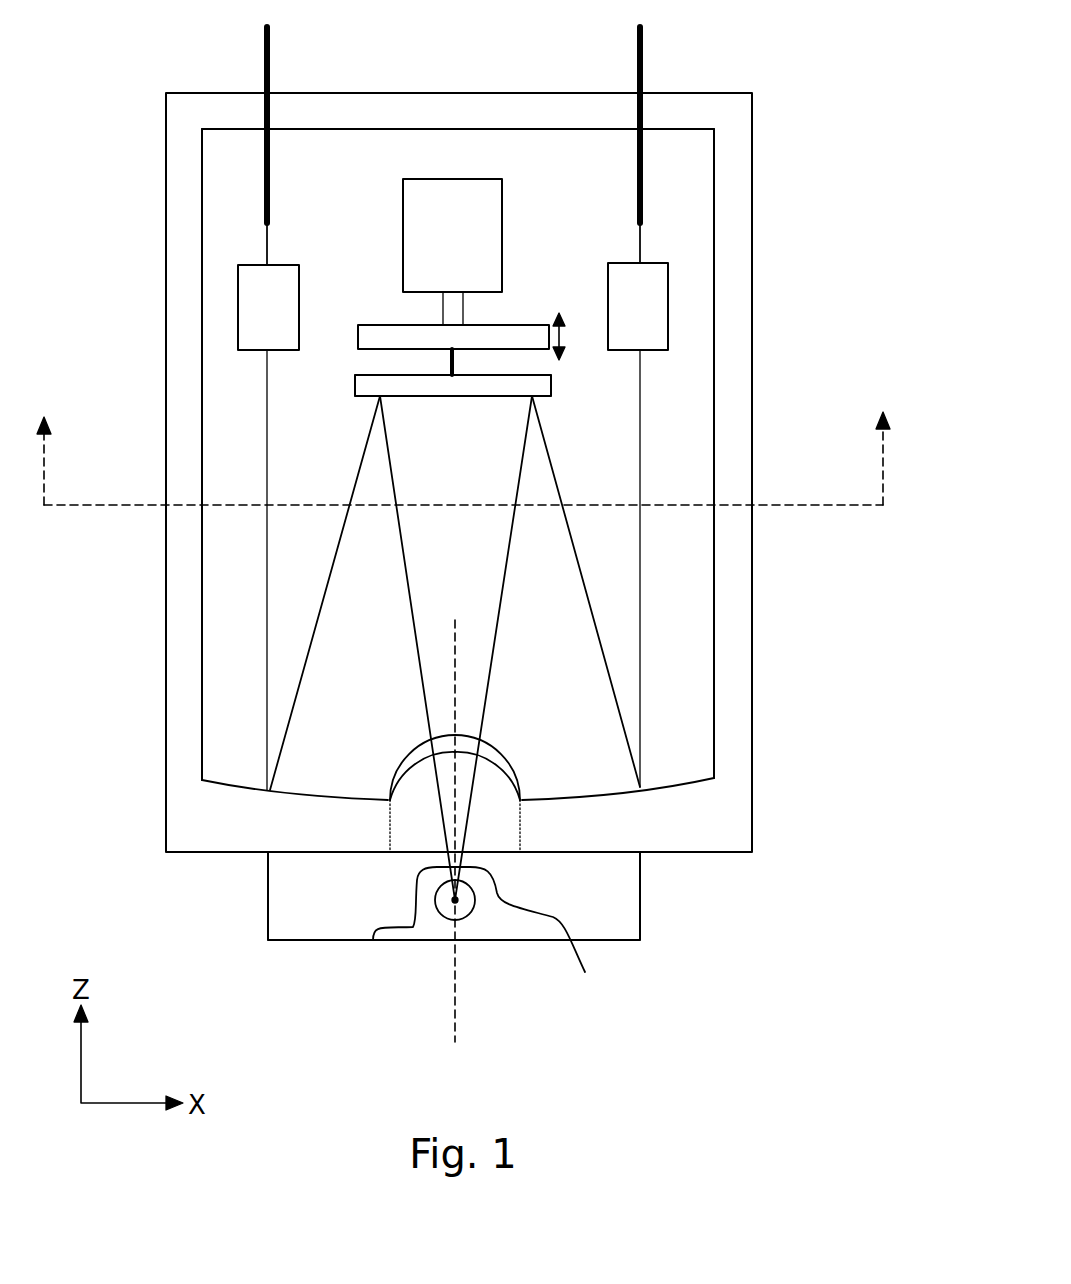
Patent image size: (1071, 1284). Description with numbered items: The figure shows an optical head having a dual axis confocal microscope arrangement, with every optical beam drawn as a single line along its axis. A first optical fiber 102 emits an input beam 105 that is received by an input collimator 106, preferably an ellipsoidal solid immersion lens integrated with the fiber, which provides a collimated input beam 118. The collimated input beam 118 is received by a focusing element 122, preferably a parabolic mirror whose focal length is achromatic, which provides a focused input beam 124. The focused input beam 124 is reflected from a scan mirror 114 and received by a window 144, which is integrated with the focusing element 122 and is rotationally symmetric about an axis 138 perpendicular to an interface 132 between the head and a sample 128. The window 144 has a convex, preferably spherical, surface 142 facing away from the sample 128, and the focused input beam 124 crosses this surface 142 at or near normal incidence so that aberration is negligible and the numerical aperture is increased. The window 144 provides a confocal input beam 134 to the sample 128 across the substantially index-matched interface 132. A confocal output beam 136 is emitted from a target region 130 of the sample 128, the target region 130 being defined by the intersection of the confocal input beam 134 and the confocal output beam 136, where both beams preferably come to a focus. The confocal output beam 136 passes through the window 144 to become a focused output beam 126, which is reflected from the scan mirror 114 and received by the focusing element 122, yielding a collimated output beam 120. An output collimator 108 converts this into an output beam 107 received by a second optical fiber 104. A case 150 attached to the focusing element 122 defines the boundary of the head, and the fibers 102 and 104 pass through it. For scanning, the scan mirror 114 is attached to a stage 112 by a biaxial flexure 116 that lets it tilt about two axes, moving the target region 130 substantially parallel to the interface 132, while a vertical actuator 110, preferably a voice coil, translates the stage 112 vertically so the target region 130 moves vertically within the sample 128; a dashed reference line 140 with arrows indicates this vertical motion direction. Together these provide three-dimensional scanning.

The first optical fiber 102 is at (265, 52).
The second optical fiber 104 is at (640, 62).
The input beam 105 is at (267, 250).
The input collimator 106 is at (253, 313).
The output beam 107 is at (640, 243).
The output collimator 108 is at (647, 310).
The vertical actuator 110 is at (495, 192).
The stage 112 is at (388, 335).
The scan mirror 114 is at (370, 383).
The biaxial flexure 116 is at (460, 368).
The collimated input beam 118 is at (267, 555).
The collimated output beam 120 is at (640, 487).
The focusing element 122 is at (250, 817).
The focused input beam 124 is at (297, 677).
The focused output beam 126 is at (613, 690).
The sample 128 is at (293, 917).
The target region 130 is at (463, 923).
The interface 132 is at (620, 890).
The confocal input beam 134 is at (373, 940).
The confocal output beam 136 is at (495, 938).
The axis 138 is at (453, 1030).
The reference plane 140 is at (802, 505).
The convex surface 142 is at (403, 777).
The window 144 is at (493, 820).
The case 150 is at (445, 107).